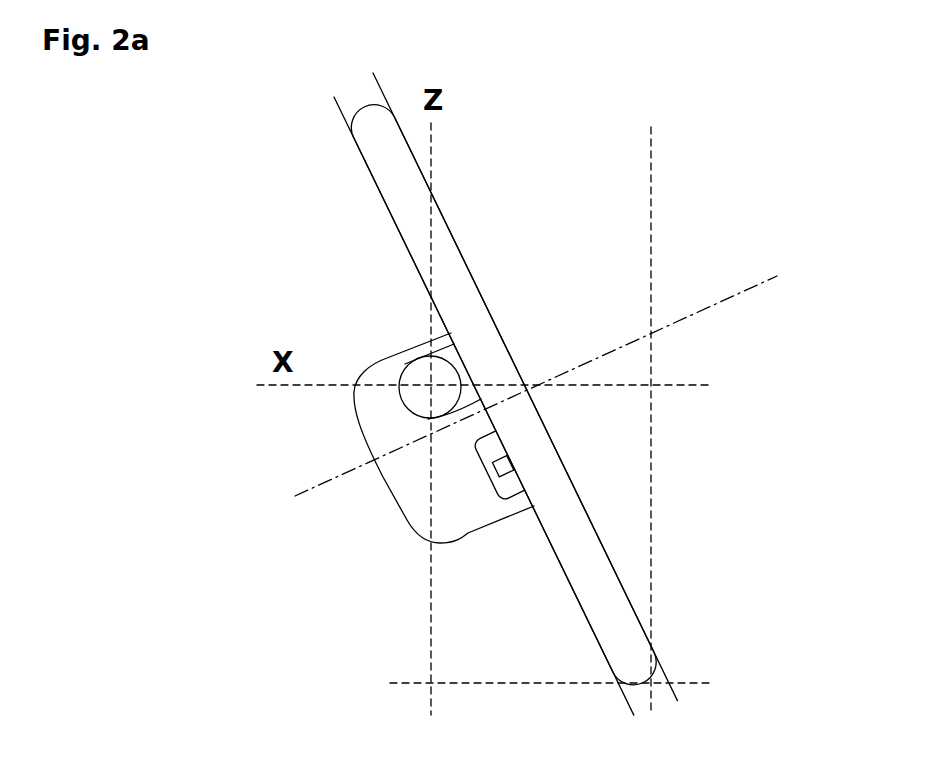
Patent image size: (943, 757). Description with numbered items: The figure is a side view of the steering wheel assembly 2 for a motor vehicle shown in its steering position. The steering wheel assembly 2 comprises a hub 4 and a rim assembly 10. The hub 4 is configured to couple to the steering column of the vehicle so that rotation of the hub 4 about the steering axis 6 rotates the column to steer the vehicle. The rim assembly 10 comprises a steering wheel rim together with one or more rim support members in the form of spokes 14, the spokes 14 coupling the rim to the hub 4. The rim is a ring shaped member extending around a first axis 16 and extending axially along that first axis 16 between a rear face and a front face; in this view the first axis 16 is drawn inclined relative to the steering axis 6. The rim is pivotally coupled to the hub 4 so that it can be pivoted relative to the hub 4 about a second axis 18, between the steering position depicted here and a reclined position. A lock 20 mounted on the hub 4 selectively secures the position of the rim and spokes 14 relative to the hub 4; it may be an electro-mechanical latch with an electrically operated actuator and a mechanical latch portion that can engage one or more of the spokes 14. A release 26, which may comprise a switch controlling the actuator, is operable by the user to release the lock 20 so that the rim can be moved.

The steering wheel assembly 2 is at (633, 86).
The hub 4 is at (387, 357).
The steering axis 6 is at (312, 492).
The rim assembly 10 is at (475, 180).
The spokes 14 is at (432, 347).
The first axis 16 is at (763, 278).
The second axis 18 is at (425, 388).
The lock 20 is at (478, 508).
The release 26 is at (558, 11).